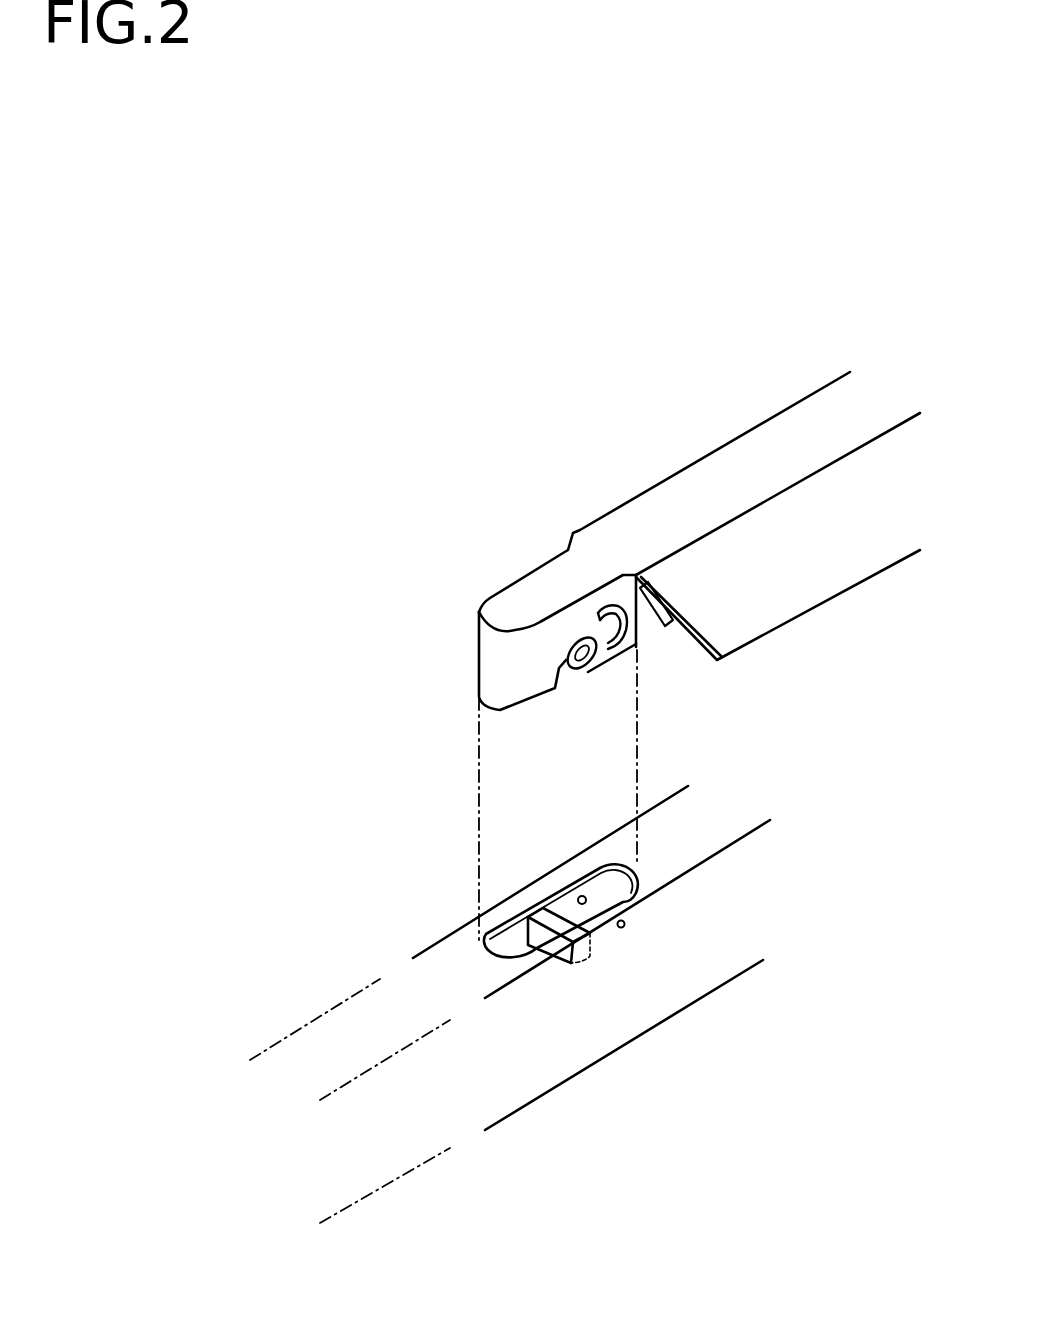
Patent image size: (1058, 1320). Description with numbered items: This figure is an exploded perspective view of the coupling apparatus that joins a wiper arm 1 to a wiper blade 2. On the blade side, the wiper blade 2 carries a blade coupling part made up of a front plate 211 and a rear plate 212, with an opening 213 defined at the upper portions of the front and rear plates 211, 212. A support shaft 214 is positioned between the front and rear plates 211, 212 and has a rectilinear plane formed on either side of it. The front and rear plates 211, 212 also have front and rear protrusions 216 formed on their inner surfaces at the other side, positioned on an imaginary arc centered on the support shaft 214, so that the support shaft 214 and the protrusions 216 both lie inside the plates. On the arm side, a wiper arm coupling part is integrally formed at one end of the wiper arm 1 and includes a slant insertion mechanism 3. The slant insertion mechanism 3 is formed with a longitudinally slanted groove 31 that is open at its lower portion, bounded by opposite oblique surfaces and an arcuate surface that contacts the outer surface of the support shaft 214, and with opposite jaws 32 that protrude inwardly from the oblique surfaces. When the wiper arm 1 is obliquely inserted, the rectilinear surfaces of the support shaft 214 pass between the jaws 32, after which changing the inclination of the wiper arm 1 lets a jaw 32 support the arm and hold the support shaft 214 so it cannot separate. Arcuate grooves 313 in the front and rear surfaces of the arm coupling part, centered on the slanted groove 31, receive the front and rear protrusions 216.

The wiper arm 1 is at (636, 497).
The wiper blade 2 is at (642, 998).
The slant insertion mechanism 3 is at (681, 676).
The slanted groove 31 is at (570, 677).
The jaws 32 is at (577, 652).
The arcuate grooves 313 is at (610, 615).
The front plate 211 is at (512, 970).
The rear plate 212 is at (550, 880).
The opening 213 is at (500, 937).
The support shaft 214 is at (537, 908).
The front and rear protrusions 216 is at (586, 900).